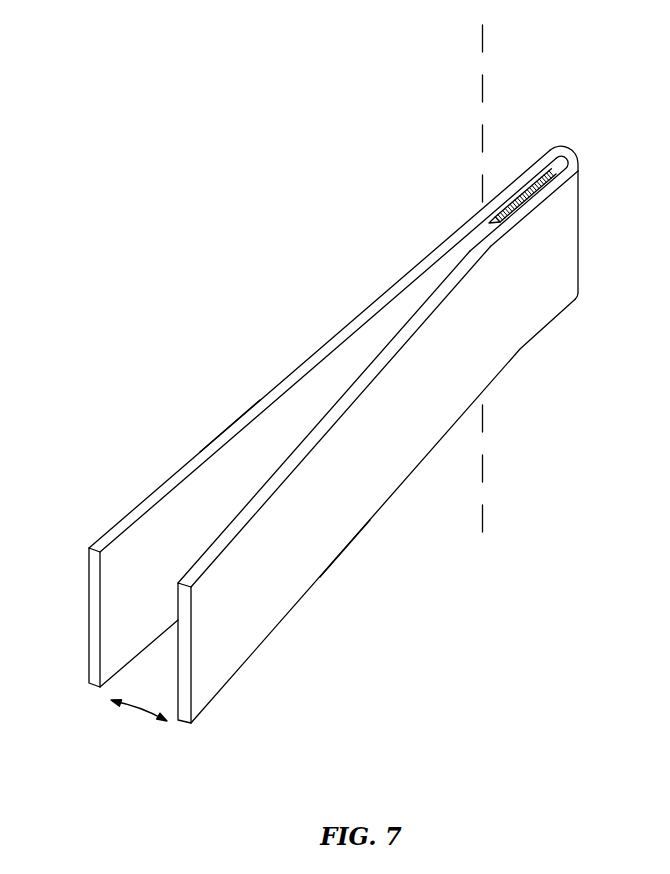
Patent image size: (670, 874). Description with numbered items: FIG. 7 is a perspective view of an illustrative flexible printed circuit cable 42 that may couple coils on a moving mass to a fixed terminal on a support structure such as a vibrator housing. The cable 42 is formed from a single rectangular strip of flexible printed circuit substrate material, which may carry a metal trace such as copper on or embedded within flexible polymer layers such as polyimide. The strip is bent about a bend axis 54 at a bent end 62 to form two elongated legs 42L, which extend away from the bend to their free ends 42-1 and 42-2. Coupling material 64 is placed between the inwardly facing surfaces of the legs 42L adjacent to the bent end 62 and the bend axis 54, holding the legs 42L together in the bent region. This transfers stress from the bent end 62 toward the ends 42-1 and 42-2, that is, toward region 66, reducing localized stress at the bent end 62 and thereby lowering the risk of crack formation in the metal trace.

The flexible printed circuit cable 42 is at (321, 436).
The end of leg 42-1 is at (286, 460).
The end of leg 42-2 is at (196, 737).
The elongated legs 42L is at (245, 414).
The bend axis 54 is at (484, 90).
The bent end 62 is at (577, 127).
The coupling material 64 is at (540, 174).
The region 66 is at (436, 234).